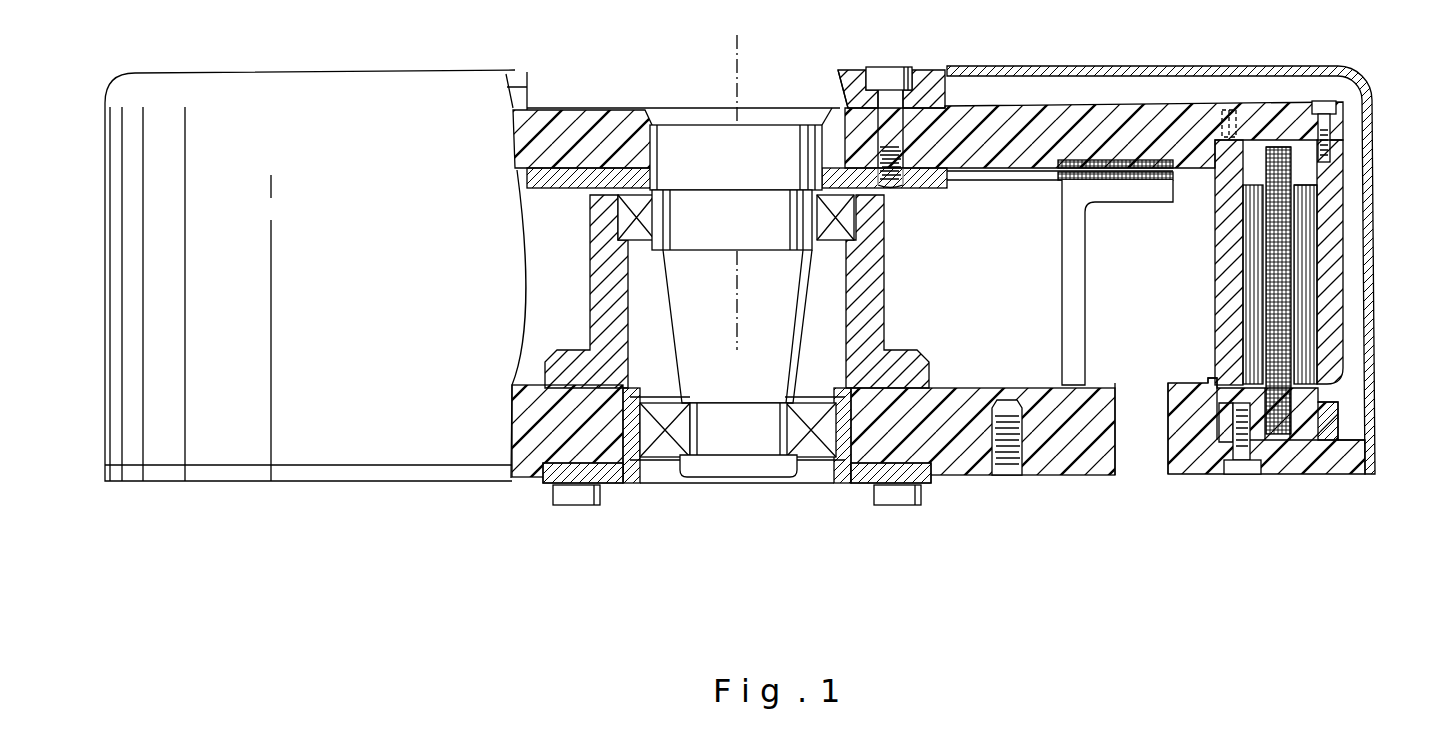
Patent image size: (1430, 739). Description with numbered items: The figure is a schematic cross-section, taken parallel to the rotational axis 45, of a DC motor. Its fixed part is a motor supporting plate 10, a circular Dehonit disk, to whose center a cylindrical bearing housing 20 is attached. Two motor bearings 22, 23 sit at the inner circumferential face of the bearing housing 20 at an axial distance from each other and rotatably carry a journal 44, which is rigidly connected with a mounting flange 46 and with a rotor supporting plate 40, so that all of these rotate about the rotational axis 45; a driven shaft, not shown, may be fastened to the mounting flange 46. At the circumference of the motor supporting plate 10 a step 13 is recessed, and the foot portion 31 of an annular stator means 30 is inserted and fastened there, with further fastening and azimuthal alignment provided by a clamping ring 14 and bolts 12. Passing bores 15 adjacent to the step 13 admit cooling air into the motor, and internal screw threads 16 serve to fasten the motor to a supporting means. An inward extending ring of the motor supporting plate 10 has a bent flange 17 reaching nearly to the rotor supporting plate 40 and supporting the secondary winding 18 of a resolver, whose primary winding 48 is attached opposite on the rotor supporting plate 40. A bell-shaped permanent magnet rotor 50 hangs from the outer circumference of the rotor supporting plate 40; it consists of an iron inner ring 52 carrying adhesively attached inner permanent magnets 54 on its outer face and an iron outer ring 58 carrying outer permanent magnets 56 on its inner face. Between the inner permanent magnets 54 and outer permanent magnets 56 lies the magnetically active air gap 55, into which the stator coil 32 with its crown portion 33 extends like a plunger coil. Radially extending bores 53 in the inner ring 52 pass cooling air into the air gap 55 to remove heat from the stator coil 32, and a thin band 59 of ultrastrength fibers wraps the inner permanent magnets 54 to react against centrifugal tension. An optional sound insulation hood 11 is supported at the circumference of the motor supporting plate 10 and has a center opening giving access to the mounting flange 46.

The motor supporting plate 10 is at (1058, 463).
The sound insulation hood 11 is at (1043, 68).
The bolts 12 is at (1242, 474).
The step 13 is at (1210, 418).
The clamping ring 14 is at (1342, 422).
The passing bores 15 is at (1122, 462).
The internal screw threads 16 is at (1007, 477).
The bent flange 17 is at (1137, 195).
The secondary winding 18 is at (1070, 183).
The bearing housing 20 is at (600, 279).
The motor bearing 22 is at (665, 446).
The motor bearing 23 is at (620, 215).
The stator means 30 is at (1280, 462).
The foot portion 31 is at (1302, 433).
The stator coil 32 is at (1300, 180).
The crown portion 33 is at (1278, 147).
The rotor supporting plate 40 is at (1097, 130).
The journal 44 is at (778, 298).
The rotational axis 45 is at (740, 60).
The mounting flange 46 is at (650, 92).
The primary winding 48 is at (1145, 160).
The permanent magnet rotor 50 is at (1347, 150).
The inner ring 52 is at (1228, 274).
The radially extending bores 53 is at (1222, 180).
The inner permanent magnets 54 is at (1252, 319).
The air gap 55 is at (1283, 174).
The outer permanent magnets 56 is at (1305, 333).
The outer ring 58 is at (1328, 290).
The thin band 59 is at (1262, 240).